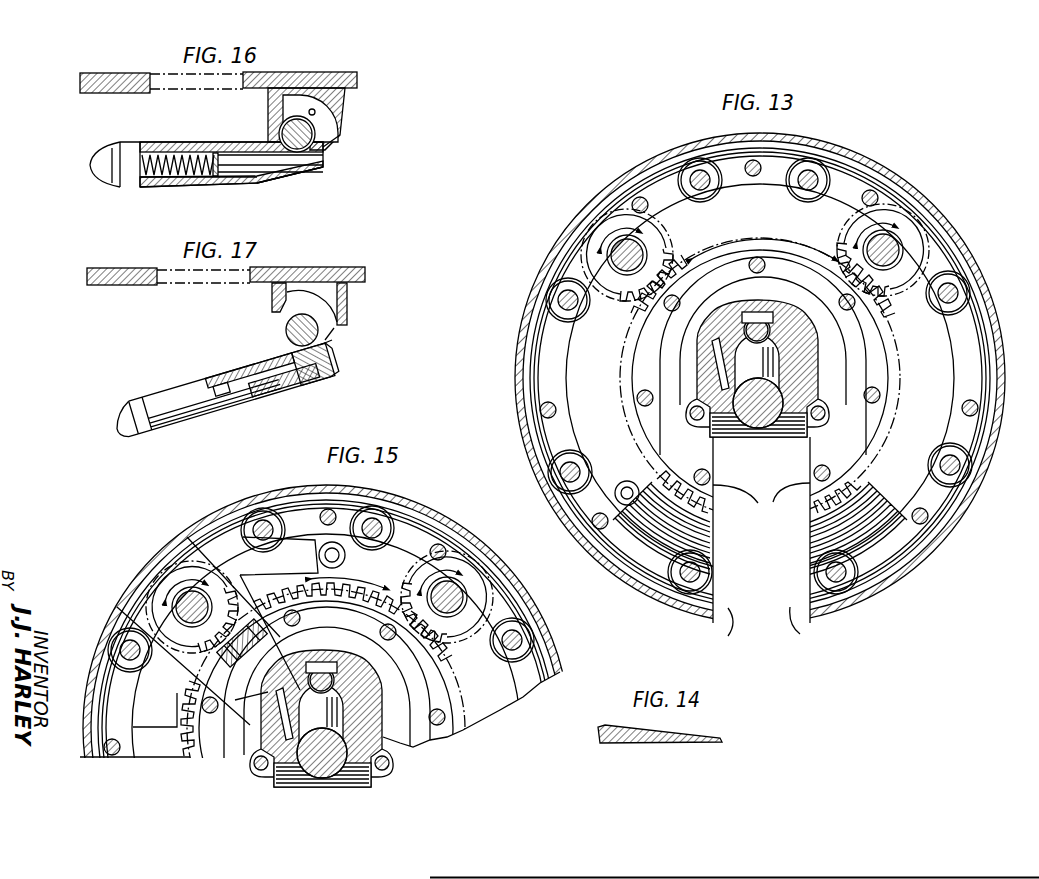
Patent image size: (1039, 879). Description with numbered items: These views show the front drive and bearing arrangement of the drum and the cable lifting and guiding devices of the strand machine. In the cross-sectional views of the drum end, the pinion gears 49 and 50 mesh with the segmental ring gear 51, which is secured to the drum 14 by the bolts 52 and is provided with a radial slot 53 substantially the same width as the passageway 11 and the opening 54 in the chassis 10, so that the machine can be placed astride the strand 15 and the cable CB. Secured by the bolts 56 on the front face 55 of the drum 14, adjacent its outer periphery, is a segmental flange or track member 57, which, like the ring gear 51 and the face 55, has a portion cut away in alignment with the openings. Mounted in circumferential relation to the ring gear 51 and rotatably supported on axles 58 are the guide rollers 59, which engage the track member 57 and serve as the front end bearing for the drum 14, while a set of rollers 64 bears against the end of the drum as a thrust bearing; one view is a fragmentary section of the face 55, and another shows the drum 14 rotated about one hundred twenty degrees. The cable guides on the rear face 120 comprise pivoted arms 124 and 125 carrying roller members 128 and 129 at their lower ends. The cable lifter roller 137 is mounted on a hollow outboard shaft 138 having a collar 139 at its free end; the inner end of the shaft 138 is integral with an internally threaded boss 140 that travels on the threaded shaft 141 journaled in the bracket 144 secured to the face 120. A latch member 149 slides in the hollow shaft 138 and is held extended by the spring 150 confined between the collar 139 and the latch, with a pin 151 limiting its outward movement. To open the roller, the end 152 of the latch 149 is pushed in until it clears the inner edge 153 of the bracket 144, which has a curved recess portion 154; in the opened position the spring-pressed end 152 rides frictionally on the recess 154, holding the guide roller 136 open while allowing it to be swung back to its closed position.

In FIG. 13, the chassis 10 is at (661, 158).
In FIG. 15, the chassis 10 is at (281, 494).
In FIG. 13, the passageway 11 is at (800, 634).
In FIG. 13, the drum 14 is at (835, 215).
In FIG. 15, the drum 14 is at (403, 558).
In FIG. 13, the strand 15 is at (750, 311).
In FIG. 15, the strand 15 is at (318, 661).
In FIG. 13, the pinion gear 49 is at (912, 262).
In FIG. 15, the pinion gear 49 is at (477, 605).
In FIG. 13, the pinion gear 50 is at (598, 266).
In FIG. 15, the pinion gear 50 is at (160, 607).
In FIG. 13, the segmental ring gear 51 is at (858, 477).
In FIG. 15, the segmental ring gear 51 is at (442, 650).
In FIG. 13, the bolts 52 is at (662, 320).
In FIG. 15, the bolts 52 is at (398, 637).
In FIG. 13, the radial slot 53 is at (774, 499).
In FIG. 15, the radial slot 53 is at (221, 680).
In FIG. 13, the opening 54 is at (727, 636).
In FIG. 13, the front face 55 is at (740, 193).
In FIG. 15, the front face 55 is at (378, 555).
In FIG. 14, the front face 55 is at (640, 728).
In FIG. 13, the bolts 56 is at (636, 200).
In FIG. 15, the bolts 56 is at (329, 510).
In FIG. 13, the track member 57 is at (968, 322).
In FIG. 15, the track member 57 is at (225, 532).
In FIG. 13, the axles 58 is at (700, 180).
In FIG. 15, the axles 58 is at (512, 640).
In FIG. 13, the guide rollers 59 is at (711, 201).
In FIG. 15, the guide rollers 59 is at (528, 633).
In FIG. 15, the rollers 64 is at (228, 662).
In FIG. 16, the rear face 120 is at (300, 72).
In FIG. 17, the rear face 120 is at (318, 258).
In FIG. 13, the arm 124 is at (828, 376).
In FIG. 15, the arm 124 is at (397, 730).
In FIG. 13, the arm 125 is at (740, 426).
In FIG. 15, the arm 125 is at (286, 765).
In FIG. 13, the roller member 128 is at (790, 368).
In FIG. 15, the roller member 128 is at (321, 699).
In FIG. 13, the roller member 129 is at (705, 327).
In FIG. 15, the roller member 129 is at (243, 716).
In FIG. 13, the guide roller 136 is at (775, 302).
In FIG. 15, the guide roller 136 is at (323, 640).
In FIG. 13, the cable lifter roller 137 is at (758, 444).
In FIG. 15, the cable lifter roller 137 is at (356, 772).
In FIG. 16, the cable lifter roller 137 is at (192, 184).
In FIG. 17, the cable lifter roller 137 is at (229, 373).
In FIG. 16, the hollow outboard shaft 138 is at (250, 178).
In FIG. 17, the hollow outboard shaft 138 is at (244, 353).
In FIG. 16, the collar 139 is at (120, 182).
In FIG. 17, the collar 139 is at (130, 437).
In FIG. 16, the threaded boss 140 is at (295, 180).
In FIG. 17, the threaded boss 140 is at (339, 375).
In FIG. 16, the threaded shaft 141 is at (308, 144).
In FIG. 17, the threaded shaft 141 is at (288, 328).
In FIG. 16, the bracket 144 is at (330, 112).
In FIG. 17, the bracket 144 is at (340, 316).
In FIG. 16, the latch member 149 is at (250, 155).
In FIG. 17, the latch member 149 is at (297, 399).
In FIG. 16, the spring 150 is at (180, 150).
In FIG. 16, the spring seat 151 is at (216, 152).
In FIG. 17, the spring seat 151 is at (247, 417).
In FIG. 16, the end of latch 152 is at (342, 141).
In FIG. 17, the end of latch 152 is at (330, 345).
In FIG. 16, the inner edge 153 is at (335, 125).
In FIG. 17, the inner edge 153 is at (336, 332).
In FIG. 16, the curved recess portion 154 is at (345, 92).
In FIG. 17, the curved recess portion 154 is at (335, 280).
In FIG. 13, the cable CB is at (758, 417).
In FIG. 15, the cable CB is at (281, 760).